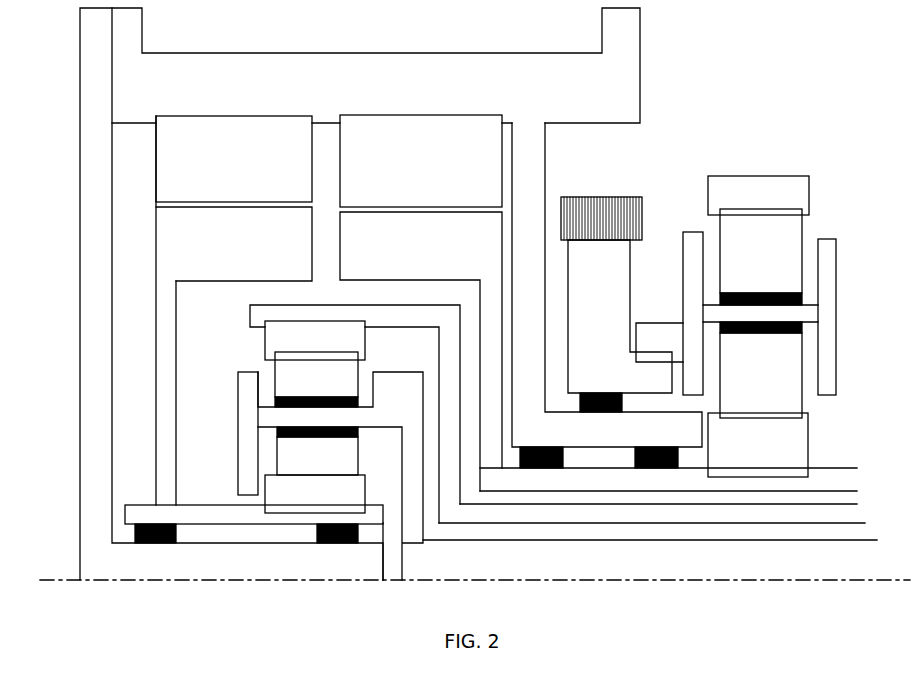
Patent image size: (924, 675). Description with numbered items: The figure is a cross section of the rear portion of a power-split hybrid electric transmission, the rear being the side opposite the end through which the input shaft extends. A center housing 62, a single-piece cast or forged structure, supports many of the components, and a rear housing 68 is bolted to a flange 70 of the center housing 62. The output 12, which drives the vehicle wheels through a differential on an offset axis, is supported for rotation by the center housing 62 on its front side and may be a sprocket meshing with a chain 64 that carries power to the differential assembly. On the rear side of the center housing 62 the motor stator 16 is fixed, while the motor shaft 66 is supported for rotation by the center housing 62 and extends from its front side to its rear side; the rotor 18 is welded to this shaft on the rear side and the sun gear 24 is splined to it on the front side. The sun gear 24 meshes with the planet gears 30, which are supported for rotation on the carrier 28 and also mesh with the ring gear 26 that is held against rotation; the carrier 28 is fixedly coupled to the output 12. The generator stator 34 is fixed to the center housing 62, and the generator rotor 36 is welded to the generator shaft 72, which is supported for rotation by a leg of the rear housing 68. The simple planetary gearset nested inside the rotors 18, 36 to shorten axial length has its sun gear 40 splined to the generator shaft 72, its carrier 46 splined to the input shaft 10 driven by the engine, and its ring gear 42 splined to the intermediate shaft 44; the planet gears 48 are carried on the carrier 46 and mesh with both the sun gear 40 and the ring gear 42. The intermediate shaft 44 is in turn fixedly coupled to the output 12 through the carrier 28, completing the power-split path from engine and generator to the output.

The input 10 is at (460, 551).
The output 12 is at (625, 326).
The stator 16 is at (421, 161).
The rotor 18 is at (421, 351).
The sun gear 24 is at (758, 445).
The ring gear 26 is at (758, 195).
The carrier 28 is at (836, 268).
The planet gears 30 is at (761, 313).
The stator 34 is at (234, 159).
The rotor 36 is at (234, 244).
The sun gear 40 is at (315, 494).
The ring gear 42 is at (355, 414).
The intermediate shaft 44 is at (682, 525).
The carrier 46 is at (238, 448).
The planet gears 48 is at (316, 413).
The center housing 62 is at (607, 295).
The chain 64 is at (597, 197).
The motor shaft 66 is at (838, 468).
The rear housing 68 is at (112, 296).
The flange 70 is at (142, 37).
The generator shaft 72 is at (232, 503).